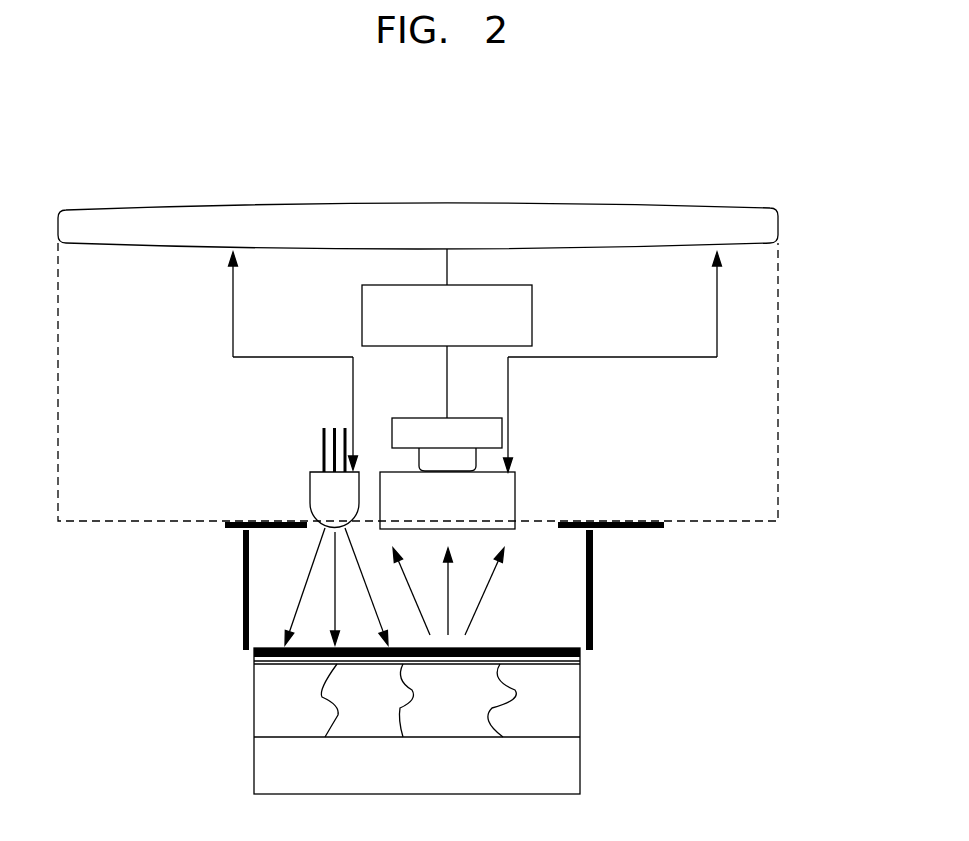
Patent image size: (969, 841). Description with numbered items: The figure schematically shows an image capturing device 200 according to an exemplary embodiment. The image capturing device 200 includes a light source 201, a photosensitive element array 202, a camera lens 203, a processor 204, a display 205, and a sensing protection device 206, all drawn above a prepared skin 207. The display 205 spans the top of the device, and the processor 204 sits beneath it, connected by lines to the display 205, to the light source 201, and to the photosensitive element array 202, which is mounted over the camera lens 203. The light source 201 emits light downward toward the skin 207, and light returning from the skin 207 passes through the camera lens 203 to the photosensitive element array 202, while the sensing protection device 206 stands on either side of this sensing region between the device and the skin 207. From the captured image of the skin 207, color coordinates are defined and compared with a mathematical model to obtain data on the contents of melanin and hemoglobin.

The image capturing device 200 is at (763, 133).
The light source 201 is at (310, 475).
The photosensitive element array 202 is at (487, 418).
The camera lens 203 is at (515, 500).
The processor 204 is at (532, 316).
The display 205 is at (448, 215).
The sensing protection device 206 is at (243, 591).
The skin 207 is at (557, 692).